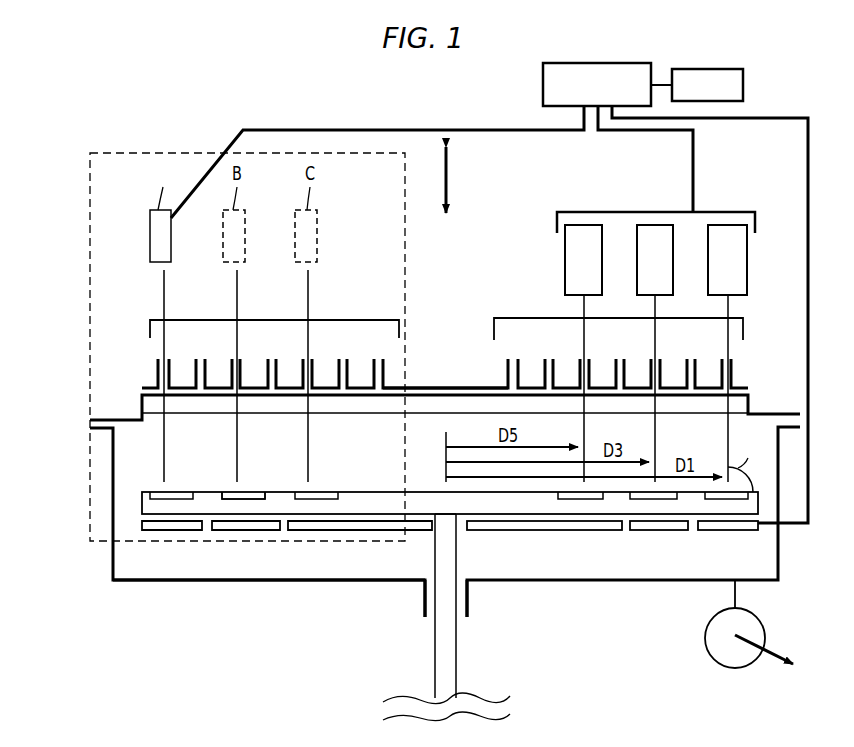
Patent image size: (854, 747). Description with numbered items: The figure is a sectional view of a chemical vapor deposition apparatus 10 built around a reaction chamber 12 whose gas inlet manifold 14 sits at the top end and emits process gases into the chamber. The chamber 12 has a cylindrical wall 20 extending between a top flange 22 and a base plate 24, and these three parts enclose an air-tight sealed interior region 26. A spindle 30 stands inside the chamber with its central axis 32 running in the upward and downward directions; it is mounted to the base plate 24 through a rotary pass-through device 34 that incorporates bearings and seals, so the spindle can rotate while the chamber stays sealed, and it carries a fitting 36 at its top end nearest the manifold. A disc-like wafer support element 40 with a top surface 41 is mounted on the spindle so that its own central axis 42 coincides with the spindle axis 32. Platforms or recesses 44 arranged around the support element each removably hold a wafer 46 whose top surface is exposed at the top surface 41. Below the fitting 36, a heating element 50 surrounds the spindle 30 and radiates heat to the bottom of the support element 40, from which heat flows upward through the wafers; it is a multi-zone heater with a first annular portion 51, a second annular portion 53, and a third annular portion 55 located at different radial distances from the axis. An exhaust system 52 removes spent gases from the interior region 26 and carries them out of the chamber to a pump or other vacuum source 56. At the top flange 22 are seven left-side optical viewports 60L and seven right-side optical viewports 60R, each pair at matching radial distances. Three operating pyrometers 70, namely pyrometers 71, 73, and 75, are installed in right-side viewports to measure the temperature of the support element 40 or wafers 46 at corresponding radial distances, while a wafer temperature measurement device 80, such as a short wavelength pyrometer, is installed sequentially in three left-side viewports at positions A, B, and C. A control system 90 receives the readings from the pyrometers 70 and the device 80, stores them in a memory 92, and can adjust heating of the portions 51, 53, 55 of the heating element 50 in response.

The chemical vapor deposition apparatus 10 is at (156, 70).
The reaction chamber 12 is at (451, 380).
The gas inlet manifold 14 is at (420, 400).
The cylindrical wall 20 is at (112, 548).
The top flange 22 is at (115, 418).
The base plate 24 is at (176, 581).
The interior region 26 is at (712, 430).
The spindle 30 is at (458, 563).
The central axis 32 is at (483, 180).
The central axis 42 is at (451, 186).
The rotary pass-through device 34 is at (467, 608).
The fitting 36 is at (432, 516).
The wafer support element 40 is at (272, 520).
The top surface 41 is at (272, 492).
The platforms or recesses 44 is at (235, 503).
The wafer 46 is at (243, 490).
The heating element 50 is at (548, 535).
The first annular portion 51 is at (725, 531).
The exhaust system 52 is at (726, 594).
The second annular portion 53 is at (657, 531).
The third annular portion 55 is at (585, 531).
The pump 56 is at (705, 640).
The left-side optical viewports 60L is at (348, 319).
The right-side optical viewports 60R is at (518, 317).
The operating pyrometers 70 is at (650, 211).
The operating pyrometer 71 is at (727, 260).
The operating pyrometer 73 is at (655, 260).
The operating pyrometer 75 is at (583, 260).
The wafer temperature measurement device 80 is at (150, 246).
The control system 90 is at (543, 92).
The memory 92 is at (743, 83).